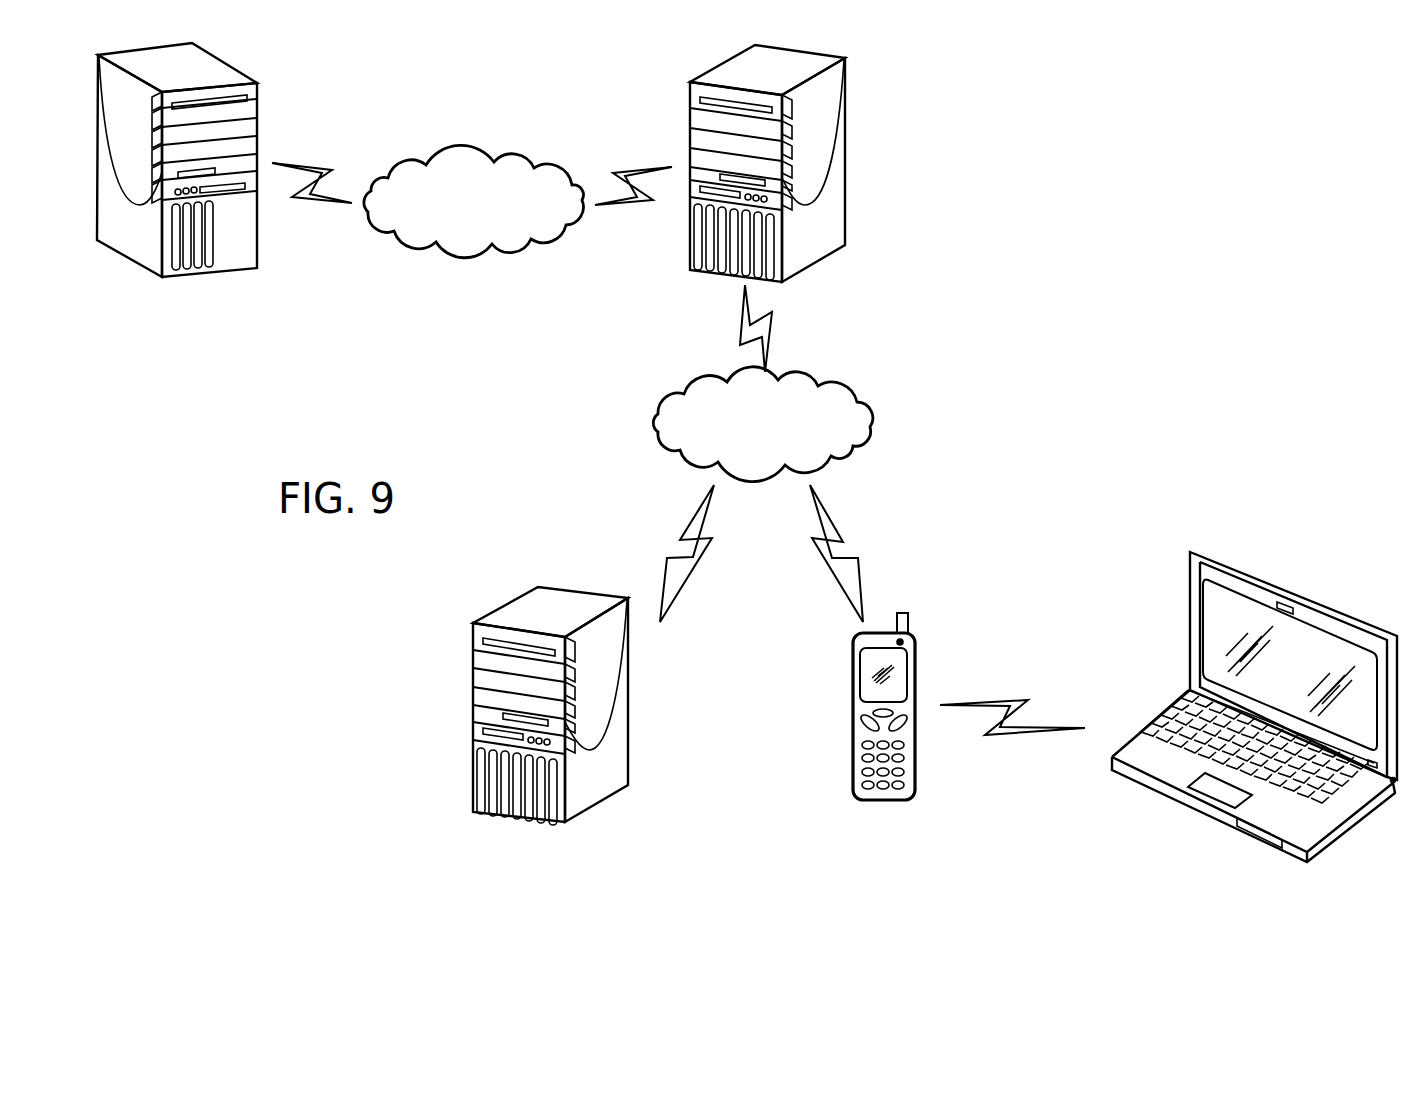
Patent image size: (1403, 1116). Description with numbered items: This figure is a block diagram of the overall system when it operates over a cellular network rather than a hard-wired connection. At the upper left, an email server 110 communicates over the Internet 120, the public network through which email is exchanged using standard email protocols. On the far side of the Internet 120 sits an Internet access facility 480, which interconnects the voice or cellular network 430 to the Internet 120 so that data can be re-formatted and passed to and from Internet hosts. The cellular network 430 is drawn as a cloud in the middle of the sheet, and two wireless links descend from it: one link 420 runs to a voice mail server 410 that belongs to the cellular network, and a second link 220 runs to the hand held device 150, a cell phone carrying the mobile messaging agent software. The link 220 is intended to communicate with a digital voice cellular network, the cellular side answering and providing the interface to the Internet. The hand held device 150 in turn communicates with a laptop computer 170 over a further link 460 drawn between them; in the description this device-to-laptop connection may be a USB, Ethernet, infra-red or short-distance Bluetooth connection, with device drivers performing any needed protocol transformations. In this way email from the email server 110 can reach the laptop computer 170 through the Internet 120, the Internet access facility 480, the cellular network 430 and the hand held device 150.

The email server 110 is at (256, 83).
The Internet 120 is at (480, 158).
The Internet access facility 480 is at (820, 259).
The cellular network 430 is at (873, 423).
The wireless link to voicemail server 420 is at (684, 589).
The link 220 is at (848, 594).
The voice mail server 410 is at (473, 693).
The hand held device 150 is at (856, 722).
The wireless link between cell phone and laptop 460 is at (1013, 699).
The laptop computer 170 is at (1178, 705).